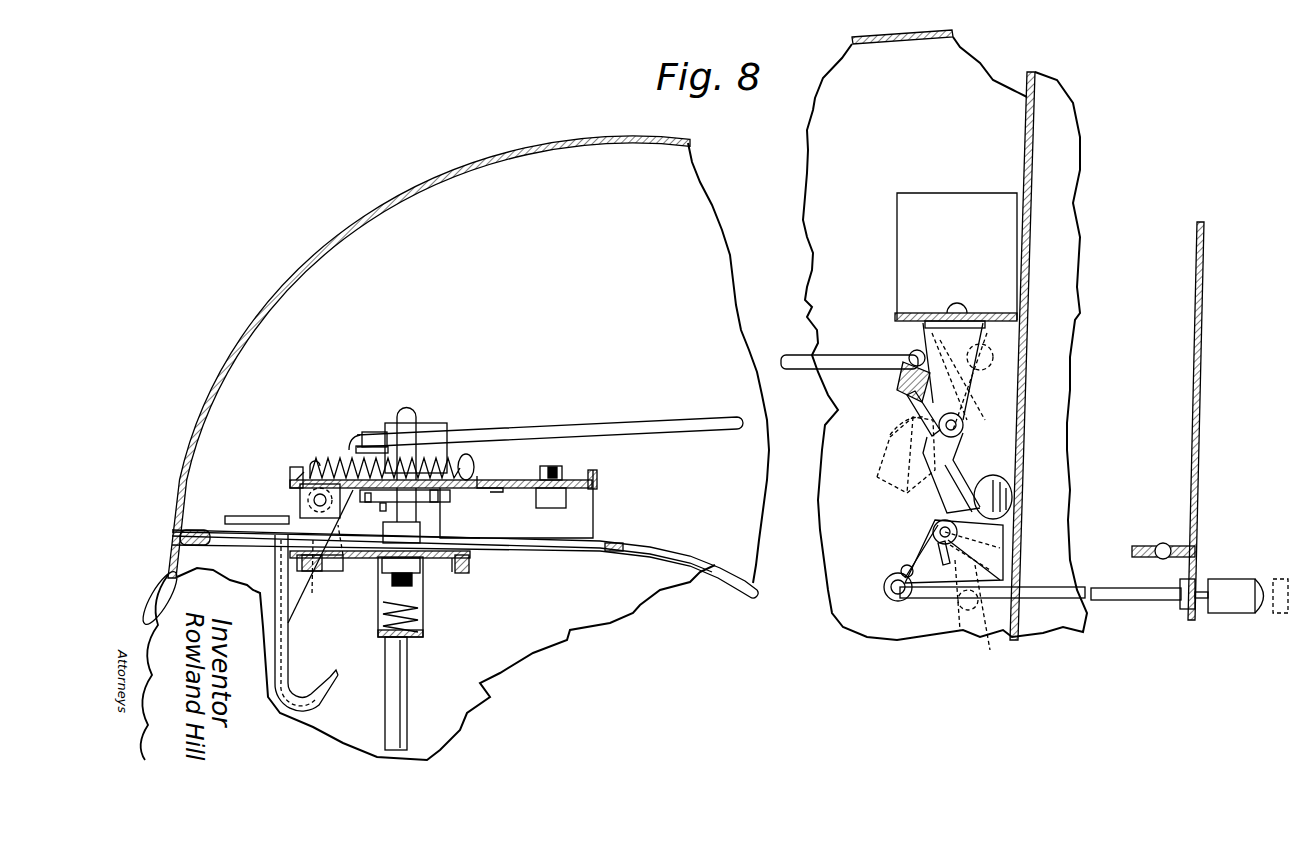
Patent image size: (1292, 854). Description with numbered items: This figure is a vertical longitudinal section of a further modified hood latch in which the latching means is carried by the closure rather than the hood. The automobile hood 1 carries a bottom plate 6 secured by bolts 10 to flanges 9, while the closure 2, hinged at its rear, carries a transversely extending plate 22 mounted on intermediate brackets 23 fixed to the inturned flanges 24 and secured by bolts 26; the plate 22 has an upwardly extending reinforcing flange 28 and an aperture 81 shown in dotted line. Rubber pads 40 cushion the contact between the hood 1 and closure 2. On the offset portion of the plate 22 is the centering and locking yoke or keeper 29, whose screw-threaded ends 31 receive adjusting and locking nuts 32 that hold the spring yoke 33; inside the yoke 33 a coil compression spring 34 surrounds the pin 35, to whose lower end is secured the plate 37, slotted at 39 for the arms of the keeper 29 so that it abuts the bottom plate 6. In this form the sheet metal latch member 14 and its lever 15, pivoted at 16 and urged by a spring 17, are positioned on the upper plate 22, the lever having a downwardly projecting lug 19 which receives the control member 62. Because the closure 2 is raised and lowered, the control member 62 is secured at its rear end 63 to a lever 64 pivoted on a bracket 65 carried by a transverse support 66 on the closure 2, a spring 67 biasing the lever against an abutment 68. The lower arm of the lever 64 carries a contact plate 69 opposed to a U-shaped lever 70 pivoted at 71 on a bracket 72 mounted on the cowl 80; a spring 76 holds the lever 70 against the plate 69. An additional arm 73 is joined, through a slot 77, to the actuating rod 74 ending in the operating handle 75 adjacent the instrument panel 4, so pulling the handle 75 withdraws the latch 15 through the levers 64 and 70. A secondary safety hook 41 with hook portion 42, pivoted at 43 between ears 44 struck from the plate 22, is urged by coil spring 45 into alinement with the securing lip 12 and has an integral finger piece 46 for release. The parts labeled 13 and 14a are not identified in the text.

The automobile hood 1 is at (171, 559).
The closure 2 is at (404, 200).
The instrument panel 4 is at (1201, 405).
The bottom plate 6 is at (452, 573).
The flanges 9 is at (207, 542).
The bolts 10 is at (325, 571).
The securing lip 12 is at (320, 556).
The base plate 13 is at (472, 565).
The latch member 14 is at (428, 424).
The lug 14a is at (386, 432).
The lever 15 is at (484, 481).
The pivot 16 is at (476, 490).
The spring 17 is at (357, 451).
The lug 19 is at (366, 445).
The transversely extending plate 22 is at (577, 480).
The brackets 23 is at (594, 506).
The flanges 24 is at (209, 535).
The securing bolts 26 is at (553, 467).
The reinforcing flange 28 is at (597, 480).
The yoke or keeper 29 is at (405, 408).
The screw-threaded ends 31 is at (412, 583).
The adjusting and locking nuts 32 is at (421, 526).
The spring yoke 33 is at (416, 593).
The coil compression spring 34 is at (383, 618).
The pin 35 is at (408, 686).
The plate 37 is at (440, 503).
The slots 39 is at (422, 503).
The pads or cushioning members 40 is at (185, 538).
The lever or hook 41 is at (290, 640).
The hook portion 42 is at (337, 682).
The pivot 43 is at (312, 497).
The ears 44 is at (306, 503).
The coil spring 45 is at (301, 485).
The finger or handle piece 46 is at (264, 517).
The control member 62 is at (725, 422).
The rear end connection 63 is at (911, 353).
The lever 64 is at (907, 378).
The bracket 65 is at (968, 388).
The transverse support 66 is at (912, 318).
The spring 67 is at (930, 433).
The abutment 68 is at (913, 398).
The contact portion or plate 69 is at (883, 490).
The U-shaped lever 70 is at (970, 463).
The pivot 71 is at (932, 535).
The bracket 72 is at (1003, 548).
The arm 73 is at (888, 590).
The actuating rod 74 is at (947, 600).
The operating handle 75 is at (1231, 578).
The spring 76 is at (1000, 536).
The slot 77 is at (906, 570).
The cowl 80 is at (1037, 150).
The aperture 81 is at (374, 506).